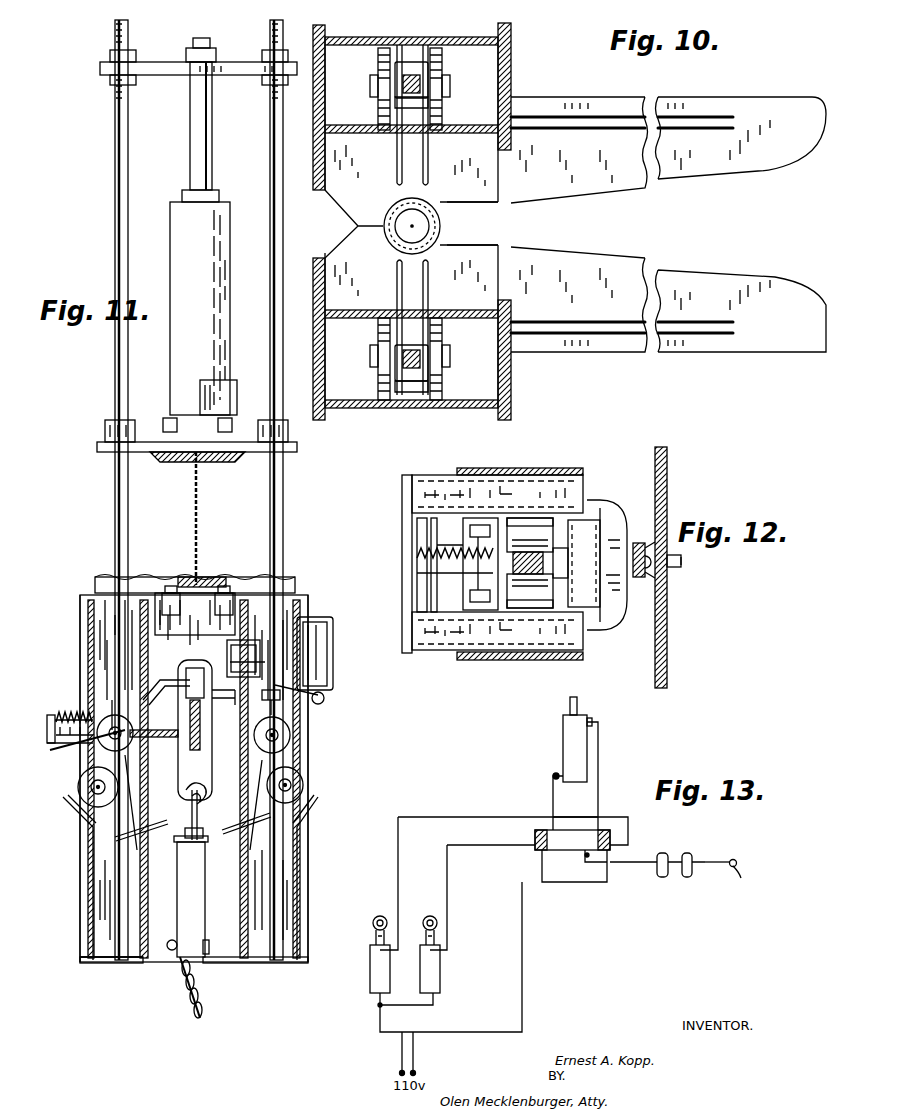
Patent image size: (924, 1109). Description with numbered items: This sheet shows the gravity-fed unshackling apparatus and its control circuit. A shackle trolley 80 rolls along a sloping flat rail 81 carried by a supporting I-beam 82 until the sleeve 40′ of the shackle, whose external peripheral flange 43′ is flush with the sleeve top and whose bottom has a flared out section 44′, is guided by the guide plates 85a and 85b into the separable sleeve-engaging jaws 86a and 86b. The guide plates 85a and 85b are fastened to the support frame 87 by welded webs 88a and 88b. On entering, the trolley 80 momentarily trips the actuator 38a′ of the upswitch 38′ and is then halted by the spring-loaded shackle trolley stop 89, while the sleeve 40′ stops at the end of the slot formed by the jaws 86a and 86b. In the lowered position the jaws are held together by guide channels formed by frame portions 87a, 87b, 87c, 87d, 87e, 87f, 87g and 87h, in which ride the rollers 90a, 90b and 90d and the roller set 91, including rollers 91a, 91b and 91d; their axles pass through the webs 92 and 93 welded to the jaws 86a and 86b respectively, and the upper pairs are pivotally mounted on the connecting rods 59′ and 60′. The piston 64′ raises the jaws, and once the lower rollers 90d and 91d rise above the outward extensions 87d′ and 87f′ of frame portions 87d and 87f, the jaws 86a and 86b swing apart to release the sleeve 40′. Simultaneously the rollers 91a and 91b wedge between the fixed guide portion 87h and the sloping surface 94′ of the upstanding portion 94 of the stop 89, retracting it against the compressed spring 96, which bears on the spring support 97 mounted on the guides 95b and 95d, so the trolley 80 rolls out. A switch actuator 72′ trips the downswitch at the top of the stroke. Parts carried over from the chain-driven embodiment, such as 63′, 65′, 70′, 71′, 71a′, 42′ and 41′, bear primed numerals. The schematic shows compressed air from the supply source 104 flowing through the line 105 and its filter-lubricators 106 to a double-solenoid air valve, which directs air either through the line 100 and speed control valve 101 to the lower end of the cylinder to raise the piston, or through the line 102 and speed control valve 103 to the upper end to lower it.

In FIG. 10, the support frame 87 is at (519, 385).
In FIG. 11, the support frame 87 is at (316, 873).
In FIG. 10, the frame portion 87a is at (511, 410).
In FIG. 11, the frame portion 87a is at (308, 912).
In FIG. 10, the frame portion 87b is at (345, 311).
In FIG. 11, the frame portion 87b is at (265, 962).
In FIG. 10, the frame portion 87c is at (318, 418).
In FIG. 10, the frame portion 87d is at (420, 408).
In FIG. 11, the frame portion 87d is at (300, 940).
In FIG. 10, the frame portion 87e is at (511, 80).
In FIG. 11, the frame portion 87e is at (80, 872).
In FIG. 12, the frame portion 87e is at (497, 469).
In FIG. 10, the frame portion 87f is at (416, 40).
In FIG. 11, the frame portion 87f is at (85, 958).
In FIG. 10, the frame portion 87g is at (313, 42).
In FIG. 12, the frame portion 87g is at (500, 660).
In FIG. 10, the fixed guide portion 87h is at (370, 133).
In FIG. 11, the fixed guide portion 87h is at (140, 962).
In FIG. 11, the outward extension 87f′ is at (88, 830).
In FIG. 12, the outward extension 87f′ is at (420, 582).
In FIG. 11, the outward extension 87d′ is at (318, 800).
In FIG. 10, the rollers 91 is at (383, 42).
In FIG. 10, the roller 91a is at (442, 122).
In FIG. 12, the roller 91a is at (542, 522).
In FIG. 10, the roller 91b is at (378, 122).
In FIG. 11, the roller 91b is at (100, 717).
In FIG. 12, the roller 91b is at (546, 600).
In FIG. 11, the roller 91d is at (70, 801).
In FIG. 10, the web 93 is at (405, 168).
In FIG. 11, the web 93 is at (122, 835).
In FIG. 10, the web 92 is at (405, 298).
In FIG. 11, the web 92 is at (266, 816).
In FIG. 10, the roller 90a is at (442, 393).
In FIG. 11, the roller 90a is at (160, 672).
In FIG. 10, the roller 90b is at (378, 393).
In FIG. 11, the roller 90b is at (292, 740).
In FIG. 11, the roller 90d is at (302, 786).
In FIG. 10, the welded web 88a is at (572, 322).
In FIG. 10, the welded web 88b is at (554, 128).
In FIG. 10, the guide plate 85a is at (581, 251).
In FIG. 11, the guide plate 85a is at (215, 964).
In FIG. 10, the guide plate 85b is at (589, 189).
In FIG. 11, the guide plate 85b is at (160, 964).
In FIG. 10, the sleeve-engaging jaw 86a is at (453, 245).
In FIG. 11, the sleeve-engaging jaw 86a is at (235, 826).
In FIG. 10, the sleeve-engaging jaw 86b is at (454, 202).
In FIG. 11, the sleeve-engaging jaw 86b is at (150, 825).
In FIG. 10, the sleeve 40′ is at (383, 205).
In FIG. 11, the sleeve 40′ is at (205, 904).
In FIG. 10, the external peripheral flange 43′ is at (386, 234).
In FIG. 11, the external peripheral flange 43′ is at (182, 842).
In FIG. 11, the connecting rod 60′ is at (115, 235).
In FIG. 11, the connecting rod 59′ is at (283, 258).
In FIG. 11, the top plate 63′ is at (100, 70).
In FIG. 11, the piston 64′ is at (212, 128).
In FIG. 11, the cylinder 65′ is at (170, 306).
In FIG. 11, the valve 70′ is at (231, 384).
In FIG. 11, the supporting I-beam 82 is at (198, 522).
In FIG. 11, the upstanding portion 94 is at (90, 691).
In FIG. 11, the sloping surface 94′ is at (80, 786).
In FIG. 11, the compressed spring 96 is at (65, 706).
In FIG. 11, the spring support 97 is at (80, 740).
In FIG. 12, the spring support 97 is at (402, 612).
In FIG. 11, the shackle trolley stop 89 is at (150, 730).
In FIG. 12, the shackle trolley stop 89 is at (615, 630).
In FIG. 11, the flat rail 81 is at (200, 740).
In FIG. 12, the flat rail 81 is at (667, 668).
In FIG. 11, the shackle trolley 80 is at (185, 790).
In FIG. 12, the shackle trolley 80 is at (638, 543).
In FIG. 11, the upswitch 38′ is at (227, 652).
In FIG. 11, the actuator 38a′ is at (218, 700).
In FIG. 11, the switch 71′ is at (333, 662).
In FIG. 11, the switch lever 71a′ is at (322, 700).
In FIG. 11, the switch actuator 72′ is at (285, 705).
In FIG. 11, the pin 42′ is at (171, 940).
In FIG. 11, the flared out section 44′ is at (208, 948).
In FIG. 11, the chain 41′ is at (197, 1006).
In FIG. 12, the guide 95d is at (422, 477).
In FIG. 12, the guide 95b is at (583, 650).
In FIG. 13, the speed control valve 103 is at (593, 725).
In FIG. 13, the line 102 is at (598, 772).
In FIG. 13, the speed control valve 101 is at (553, 779).
In FIG. 13, the line 100 is at (553, 794).
In FIG. 13, the filter-lubricators 106 is at (685, 880).
In FIG. 13, the line 105 is at (706, 862).
In FIG. 13, the supply source 104 is at (735, 865).